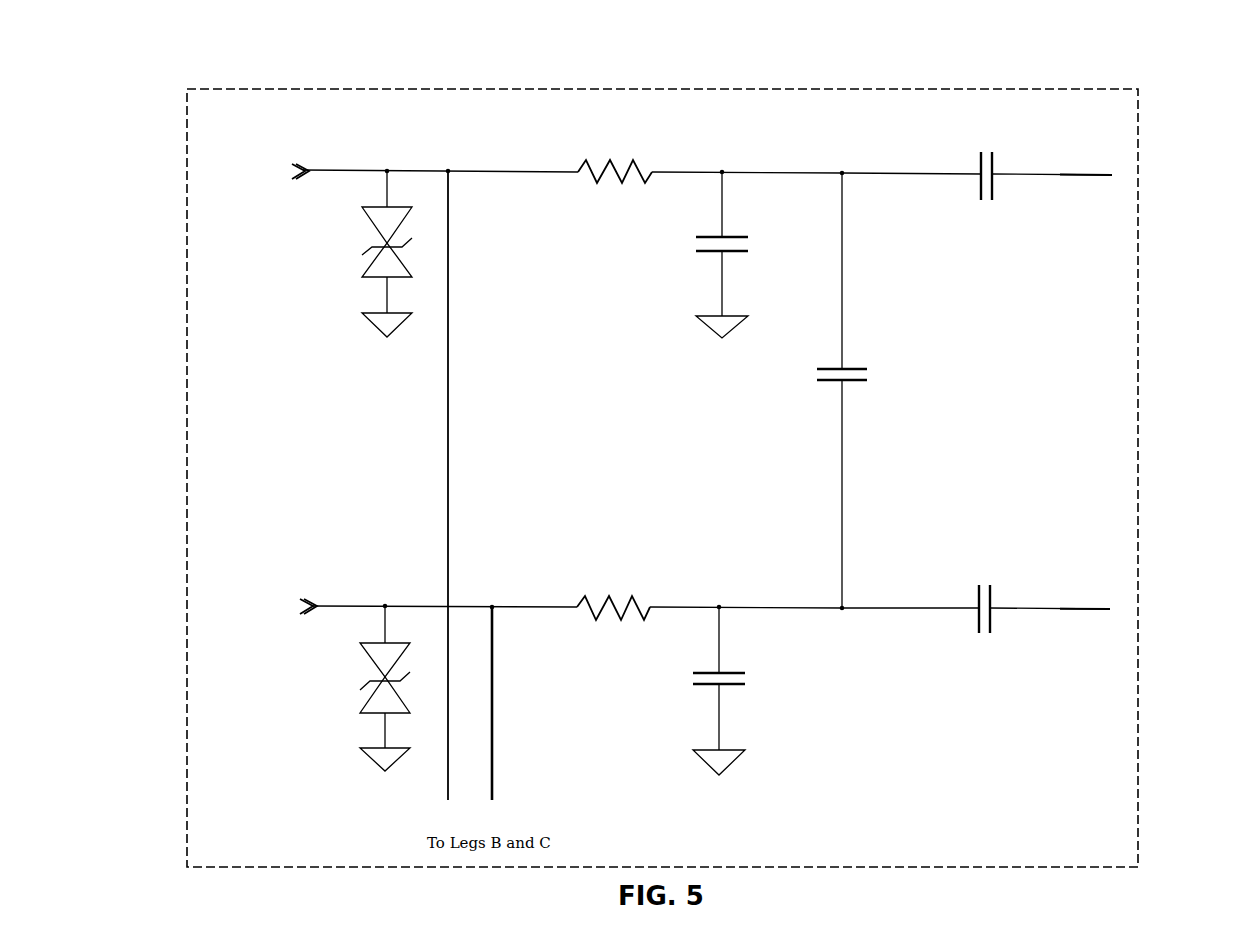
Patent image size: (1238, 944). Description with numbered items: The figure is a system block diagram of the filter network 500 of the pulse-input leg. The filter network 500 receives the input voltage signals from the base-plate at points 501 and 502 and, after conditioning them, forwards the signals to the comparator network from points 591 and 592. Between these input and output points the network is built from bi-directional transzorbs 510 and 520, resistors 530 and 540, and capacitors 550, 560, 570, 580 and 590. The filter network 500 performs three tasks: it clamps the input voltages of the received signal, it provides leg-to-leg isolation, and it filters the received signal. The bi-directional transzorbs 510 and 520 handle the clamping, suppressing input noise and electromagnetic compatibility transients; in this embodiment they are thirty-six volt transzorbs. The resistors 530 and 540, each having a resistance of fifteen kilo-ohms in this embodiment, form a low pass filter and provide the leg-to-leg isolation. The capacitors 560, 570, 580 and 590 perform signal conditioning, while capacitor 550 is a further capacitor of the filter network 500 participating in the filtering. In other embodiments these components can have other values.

The filter network 500 is at (741, 45).
The point 501 is at (318, 160).
The point 502 is at (305, 580).
The bi-directional transzorb 510 is at (352, 287).
The bi-directional transzorb 520 is at (351, 713).
The resistor 530 is at (633, 148).
The resistor 540 is at (648, 595).
The capacitor 550 is at (752, 243).
The capacitor 560 is at (750, 687).
The capacitor 570 is at (870, 369).
The capacitor 580 is at (1005, 201).
The capacitor 590 is at (1003, 641).
The point 591 is at (1123, 178).
The point 592 is at (1110, 606).